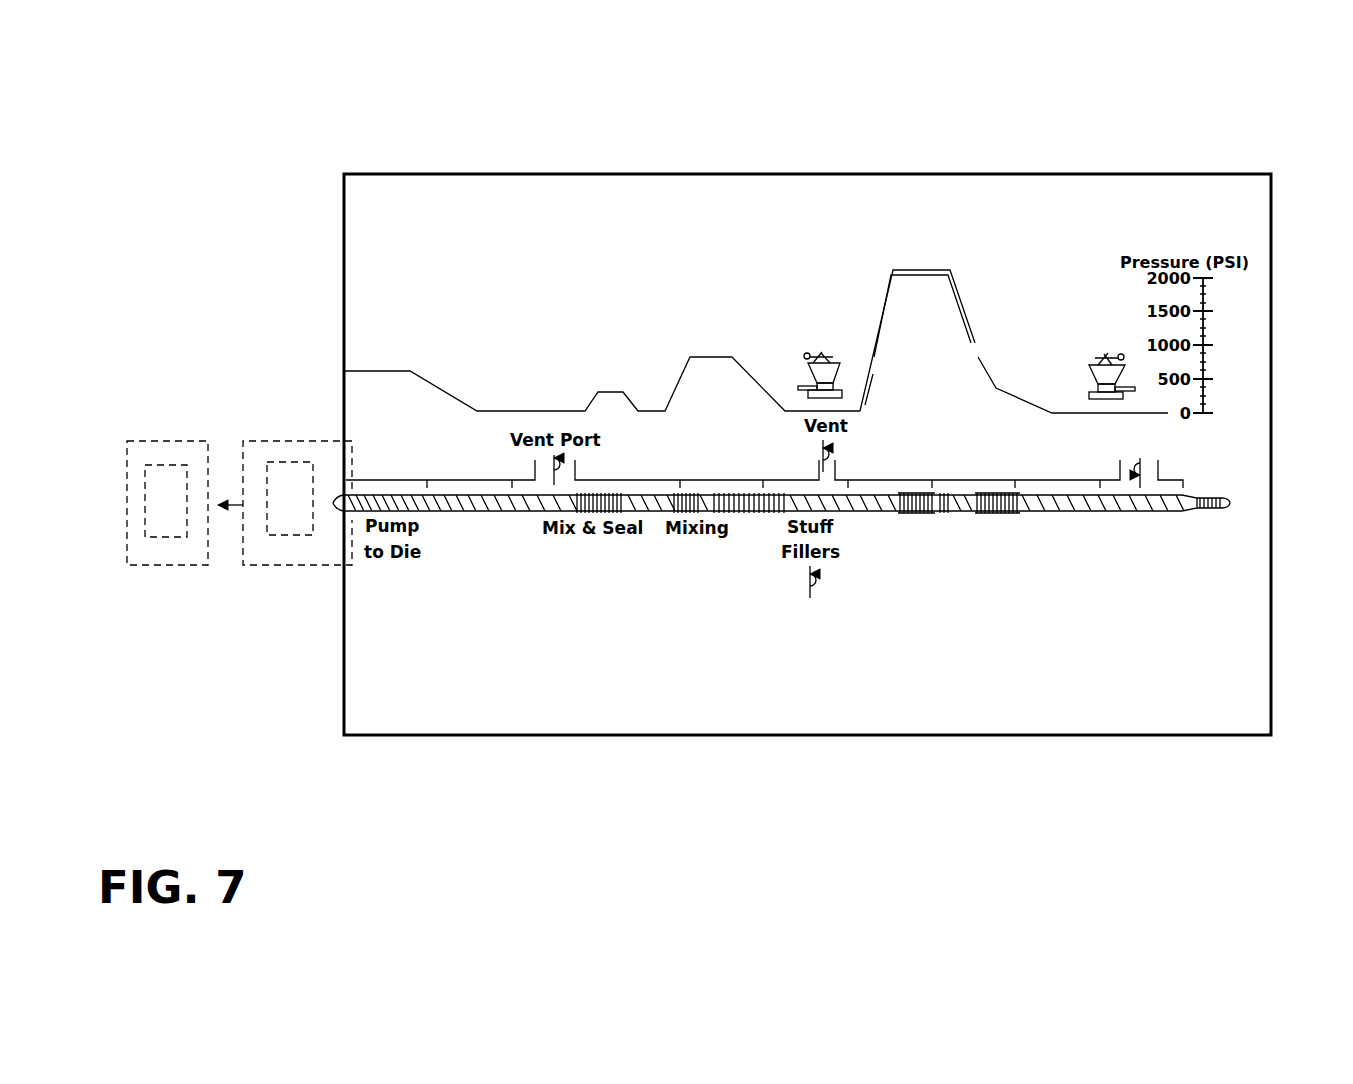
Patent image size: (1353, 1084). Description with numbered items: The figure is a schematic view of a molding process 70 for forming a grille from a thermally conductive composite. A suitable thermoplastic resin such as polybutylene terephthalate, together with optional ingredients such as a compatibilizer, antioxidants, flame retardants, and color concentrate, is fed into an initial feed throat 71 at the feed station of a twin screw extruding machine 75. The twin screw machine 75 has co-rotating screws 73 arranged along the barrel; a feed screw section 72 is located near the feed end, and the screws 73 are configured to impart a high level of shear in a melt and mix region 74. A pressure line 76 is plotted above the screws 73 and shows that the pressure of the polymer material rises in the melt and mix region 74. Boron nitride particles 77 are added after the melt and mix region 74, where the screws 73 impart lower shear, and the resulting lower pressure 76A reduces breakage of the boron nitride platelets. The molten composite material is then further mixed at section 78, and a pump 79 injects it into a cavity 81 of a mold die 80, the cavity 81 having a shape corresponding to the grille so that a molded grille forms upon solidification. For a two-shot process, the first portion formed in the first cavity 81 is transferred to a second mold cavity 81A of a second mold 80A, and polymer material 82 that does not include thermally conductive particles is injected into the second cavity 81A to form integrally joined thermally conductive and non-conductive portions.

The process 70 is at (967, 214).
The initial feed throat 71 is at (1150, 472).
The feed screw section 72 is at (1149, 528).
The co-rotating screws 73 is at (1047, 510).
The melt and mix region 74 is at (957, 515).
The twin screw extruding machine 75 is at (902, 527).
The pressure line 76 is at (968, 303).
The lower pressure 76A is at (805, 403).
The boron nitride particles 77 is at (826, 342).
The section 78 is at (694, 548).
The pump 79 is at (390, 560).
The mold die 80 is at (268, 576).
The second mold 80A is at (138, 578).
The cavity 81 is at (300, 540).
The second mold cavity 81A is at (172, 540).
The polymer material 82 is at (175, 460).